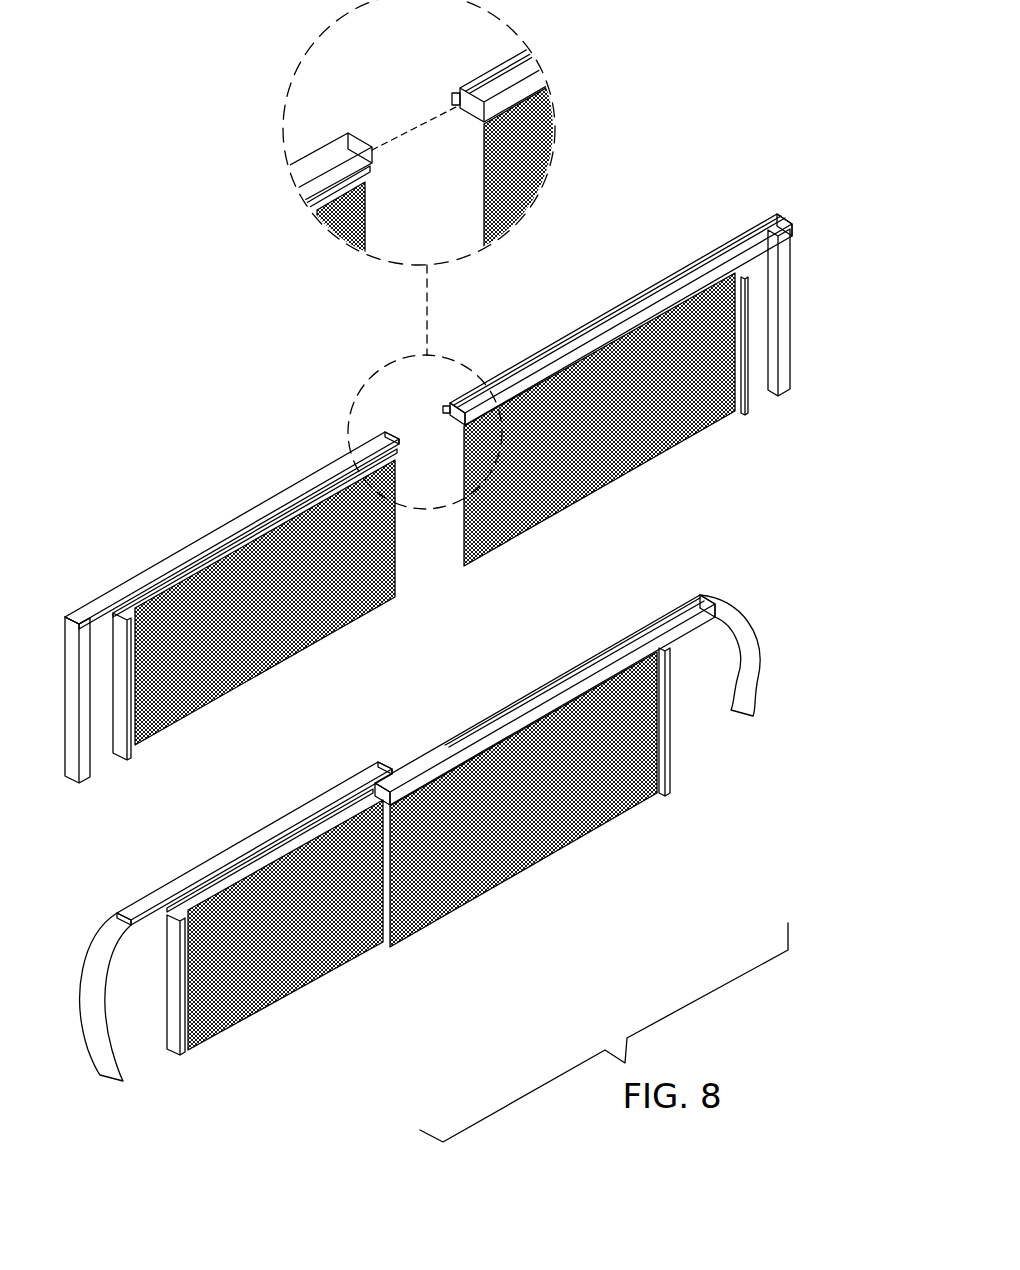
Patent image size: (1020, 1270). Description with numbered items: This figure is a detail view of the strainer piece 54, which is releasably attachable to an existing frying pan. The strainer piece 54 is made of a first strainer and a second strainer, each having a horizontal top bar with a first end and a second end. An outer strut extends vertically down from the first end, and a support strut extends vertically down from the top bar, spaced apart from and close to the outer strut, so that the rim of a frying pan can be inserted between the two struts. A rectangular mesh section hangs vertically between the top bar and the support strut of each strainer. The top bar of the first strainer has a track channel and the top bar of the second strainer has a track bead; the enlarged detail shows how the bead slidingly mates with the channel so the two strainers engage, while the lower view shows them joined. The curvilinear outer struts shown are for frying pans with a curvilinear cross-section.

The strainer piece 54 is at (736, 167).